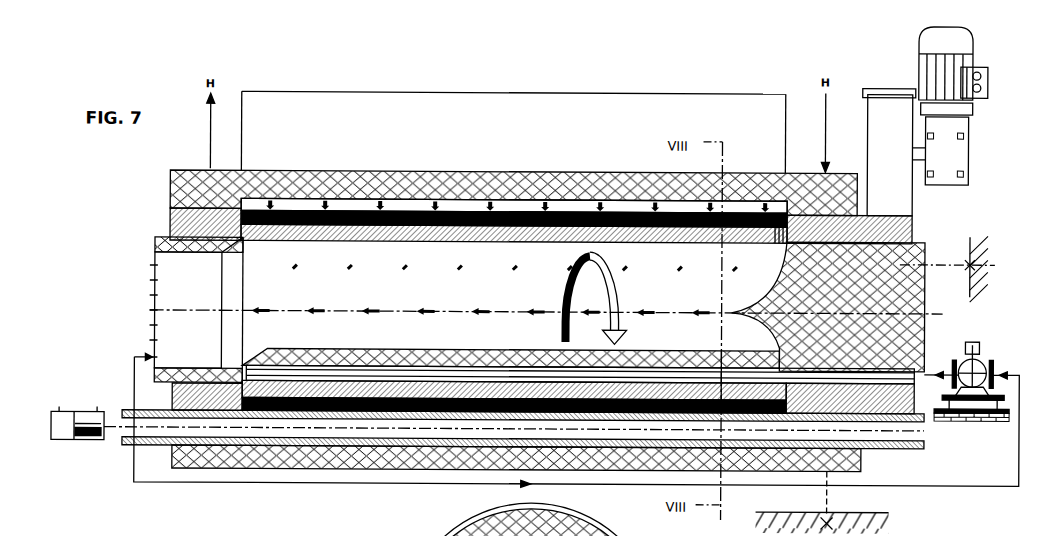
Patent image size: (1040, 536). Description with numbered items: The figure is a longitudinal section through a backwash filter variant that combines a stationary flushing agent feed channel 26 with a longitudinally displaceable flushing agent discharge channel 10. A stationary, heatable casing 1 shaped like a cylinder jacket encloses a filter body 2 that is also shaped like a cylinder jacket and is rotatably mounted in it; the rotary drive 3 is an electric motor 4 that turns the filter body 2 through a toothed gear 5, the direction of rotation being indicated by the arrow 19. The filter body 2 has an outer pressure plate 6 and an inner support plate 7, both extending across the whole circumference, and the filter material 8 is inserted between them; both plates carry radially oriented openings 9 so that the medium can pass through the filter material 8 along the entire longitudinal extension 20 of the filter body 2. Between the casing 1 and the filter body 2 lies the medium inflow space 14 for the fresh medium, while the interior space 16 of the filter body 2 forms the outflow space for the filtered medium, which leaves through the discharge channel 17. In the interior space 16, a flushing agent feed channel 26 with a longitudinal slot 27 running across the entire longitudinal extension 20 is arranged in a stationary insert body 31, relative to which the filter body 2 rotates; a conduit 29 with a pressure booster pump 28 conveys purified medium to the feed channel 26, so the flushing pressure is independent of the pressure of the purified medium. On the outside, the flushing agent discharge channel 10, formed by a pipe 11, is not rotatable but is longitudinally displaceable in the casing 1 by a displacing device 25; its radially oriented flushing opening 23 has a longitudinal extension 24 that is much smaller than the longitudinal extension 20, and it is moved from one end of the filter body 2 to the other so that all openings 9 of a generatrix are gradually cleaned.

The casing 1 is at (732, 197).
The filter body 2 is at (172, 226).
The rotary drive 3 is at (1012, 81).
The electric motor 4 is at (945, 43).
The toothed gear 5 is at (895, 184).
The pressure plate 6 is at (670, 210).
The support plate 7 is at (603, 226).
The filter material 8 is at (572, 216).
The openings 9 is at (772, 212).
The flushing agent discharge channel 10 is at (322, 432).
The pipe 11 is at (383, 438).
The medium inflow space 14 is at (462, 202).
The interior space 16 is at (448, 317).
The discharge channel 17 is at (178, 295).
The arrow 19 is at (618, 318).
The longitudinal extension 20 is at (513, 124).
The flushing opening 23 is at (727, 417).
The longitudinal extension of the flushing opening 24 is at (705, 501).
The displacing device 25 is at (87, 448).
The flushing agent feed channel 26 is at (724, 346).
The longitudinal slot 27 is at (507, 378).
The pressure booster pump 28 is at (980, 350).
The conduit 29 is at (888, 482).
The insert body 31 is at (900, 328).